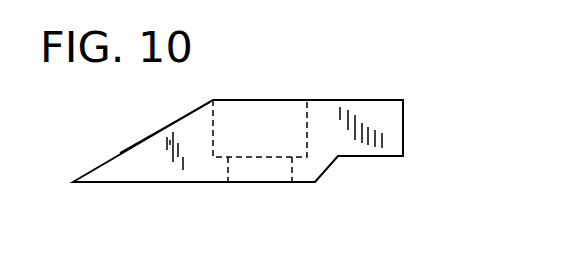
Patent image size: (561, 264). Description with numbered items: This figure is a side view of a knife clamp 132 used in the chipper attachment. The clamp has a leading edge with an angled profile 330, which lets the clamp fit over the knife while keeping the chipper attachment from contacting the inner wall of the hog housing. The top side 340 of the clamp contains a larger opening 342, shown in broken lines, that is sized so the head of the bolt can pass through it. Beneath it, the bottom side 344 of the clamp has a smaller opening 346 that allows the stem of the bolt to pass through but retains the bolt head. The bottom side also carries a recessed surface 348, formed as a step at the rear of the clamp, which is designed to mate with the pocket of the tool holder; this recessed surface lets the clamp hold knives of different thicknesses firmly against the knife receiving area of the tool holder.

The knife clamp 132 is at (417, 108).
The angled profile 330 is at (112, 157).
The top side 340 is at (332, 100).
The larger opening 342 is at (257, 120).
The bottom side 344 is at (162, 183).
The smaller opening 346 is at (272, 183).
The recessed surface 348 is at (373, 157).